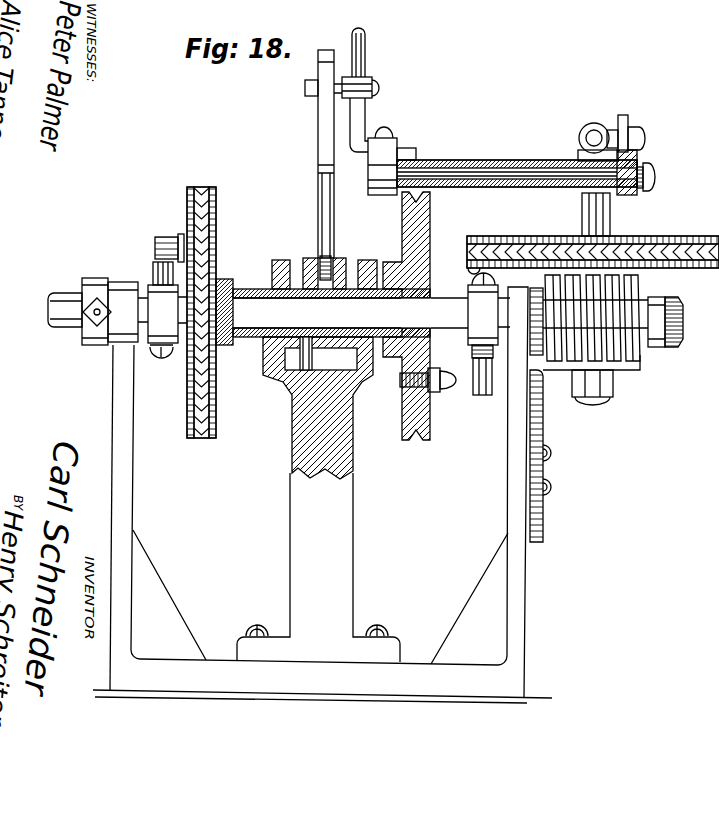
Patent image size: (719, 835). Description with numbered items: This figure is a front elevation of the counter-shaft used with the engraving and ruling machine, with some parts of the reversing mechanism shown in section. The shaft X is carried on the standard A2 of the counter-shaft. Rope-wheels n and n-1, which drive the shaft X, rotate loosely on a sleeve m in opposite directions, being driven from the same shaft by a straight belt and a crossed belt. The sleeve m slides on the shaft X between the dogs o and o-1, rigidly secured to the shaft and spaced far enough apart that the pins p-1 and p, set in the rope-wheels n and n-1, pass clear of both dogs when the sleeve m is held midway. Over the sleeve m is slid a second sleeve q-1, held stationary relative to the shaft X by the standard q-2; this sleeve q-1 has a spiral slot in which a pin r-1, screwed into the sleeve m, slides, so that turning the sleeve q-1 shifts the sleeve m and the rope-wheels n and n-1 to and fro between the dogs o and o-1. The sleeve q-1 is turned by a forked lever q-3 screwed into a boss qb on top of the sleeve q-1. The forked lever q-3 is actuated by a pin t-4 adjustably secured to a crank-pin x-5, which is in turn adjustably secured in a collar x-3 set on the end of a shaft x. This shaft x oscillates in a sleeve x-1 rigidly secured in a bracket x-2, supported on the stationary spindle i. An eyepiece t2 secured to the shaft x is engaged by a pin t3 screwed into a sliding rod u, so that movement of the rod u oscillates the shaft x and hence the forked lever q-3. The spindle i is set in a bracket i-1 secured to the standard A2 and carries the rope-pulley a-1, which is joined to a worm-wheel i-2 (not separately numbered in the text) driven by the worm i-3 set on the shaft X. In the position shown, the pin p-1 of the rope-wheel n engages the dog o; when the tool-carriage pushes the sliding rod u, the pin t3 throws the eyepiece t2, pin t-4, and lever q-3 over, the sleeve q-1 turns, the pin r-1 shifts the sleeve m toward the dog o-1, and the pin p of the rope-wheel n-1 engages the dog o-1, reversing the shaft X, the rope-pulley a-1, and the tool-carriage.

The shaft X is at (62, 311).
The rope-wheel n is at (216, 198).
The rope-wheel n-1 is at (431, 216).
The pin p-1 is at (156, 243).
The sleeve m is at (229, 284).
The dog o is at (163, 310).
The dog o-1 is at (483, 334).
The sleeve q-1 is at (267, 345).
The standard q-2 is at (318, 567).
The forked lever q-3 is at (326, 142).
The boss qb is at (336, 262).
The pin r-1 is at (338, 378).
The pin p is at (428, 392).
The shaft x is at (468, 166).
The sleeve x-1 is at (509, 167).
The bracket x-2 is at (588, 160).
The collar x-3 is at (369, 167).
The crank-pin x-5 is at (367, 55).
The pin t-4 is at (305, 88).
The eyepiece t2 is at (629, 120).
The pin t3 is at (645, 138).
The sliding rod u is at (598, 133).
The stationary spindle i is at (584, 206).
The bracket i-1 is at (545, 421).
The worm i-2 is at (683, 318).
The worm i-3 is at (625, 356).
The rope-pulley a-1 is at (664, 250).
The standard A2 is at (526, 623).